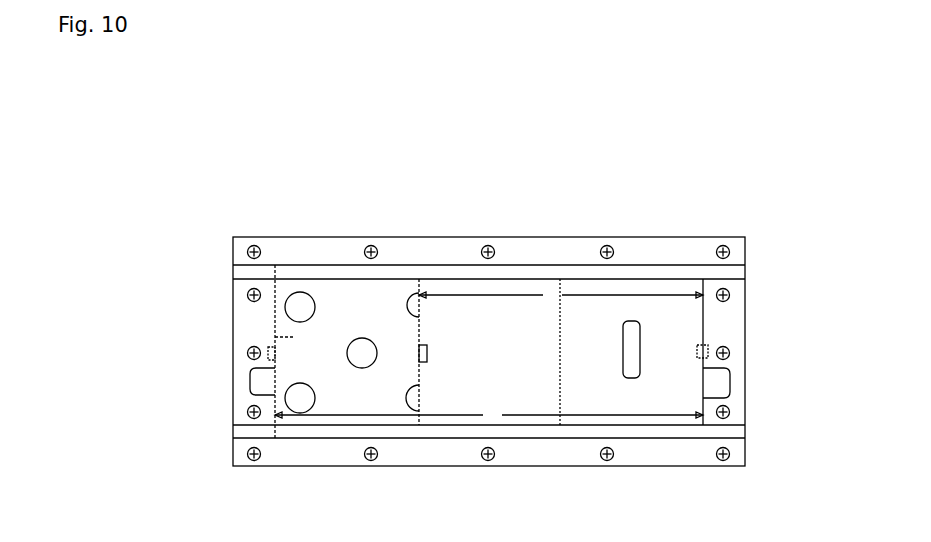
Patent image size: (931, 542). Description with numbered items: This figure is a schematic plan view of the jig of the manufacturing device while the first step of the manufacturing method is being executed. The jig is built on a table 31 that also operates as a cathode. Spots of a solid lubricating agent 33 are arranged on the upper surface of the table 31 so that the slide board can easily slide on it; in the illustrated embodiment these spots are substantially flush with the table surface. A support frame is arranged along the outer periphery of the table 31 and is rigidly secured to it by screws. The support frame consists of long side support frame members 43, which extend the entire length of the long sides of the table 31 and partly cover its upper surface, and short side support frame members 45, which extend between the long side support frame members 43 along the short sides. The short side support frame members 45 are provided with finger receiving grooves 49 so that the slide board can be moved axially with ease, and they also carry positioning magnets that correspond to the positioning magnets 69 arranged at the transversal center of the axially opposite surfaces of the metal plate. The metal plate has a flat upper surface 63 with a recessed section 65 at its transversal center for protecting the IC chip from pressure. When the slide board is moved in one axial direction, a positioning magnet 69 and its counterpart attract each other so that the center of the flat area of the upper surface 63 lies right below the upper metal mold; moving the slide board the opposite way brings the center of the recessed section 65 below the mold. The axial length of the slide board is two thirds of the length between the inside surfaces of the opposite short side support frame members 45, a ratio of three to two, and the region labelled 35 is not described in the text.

The table 31 is at (293, 337).
The solid lubricating agent 33 is at (293, 305).
The right notch 35 is at (717, 380).
The long side support frame member 43 is at (302, 452).
The short side support frame member 45 is at (248, 380).
The finger receiving groove 49 is at (270, 347).
The upper surface of the metal plate 63 is at (553, 362).
The recessed section 65 is at (632, 332).
The positioning magnet 69 is at (418, 352).